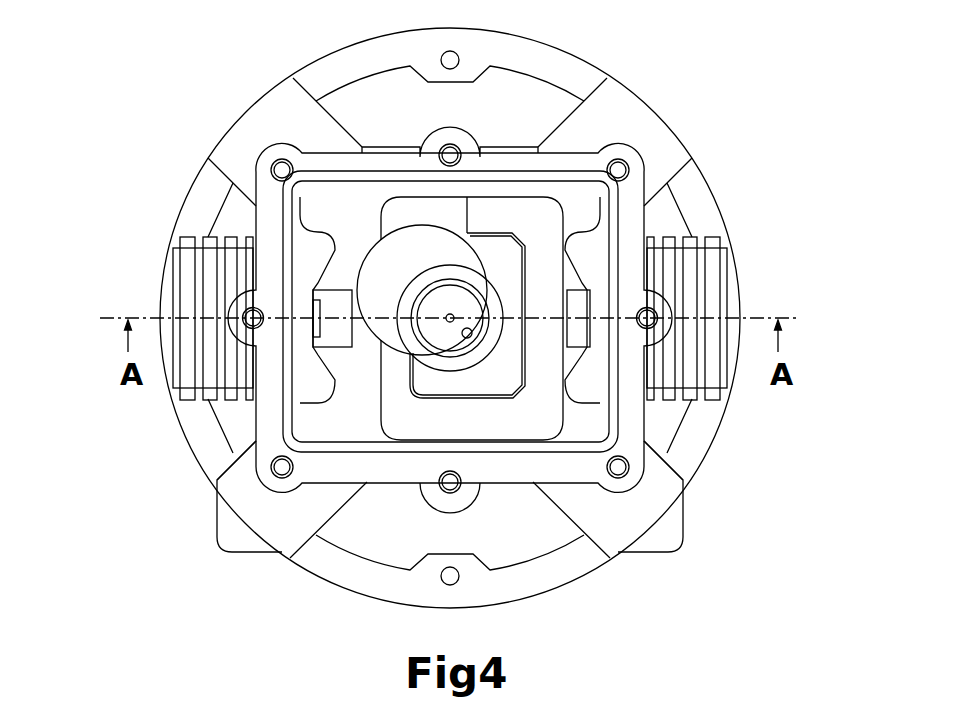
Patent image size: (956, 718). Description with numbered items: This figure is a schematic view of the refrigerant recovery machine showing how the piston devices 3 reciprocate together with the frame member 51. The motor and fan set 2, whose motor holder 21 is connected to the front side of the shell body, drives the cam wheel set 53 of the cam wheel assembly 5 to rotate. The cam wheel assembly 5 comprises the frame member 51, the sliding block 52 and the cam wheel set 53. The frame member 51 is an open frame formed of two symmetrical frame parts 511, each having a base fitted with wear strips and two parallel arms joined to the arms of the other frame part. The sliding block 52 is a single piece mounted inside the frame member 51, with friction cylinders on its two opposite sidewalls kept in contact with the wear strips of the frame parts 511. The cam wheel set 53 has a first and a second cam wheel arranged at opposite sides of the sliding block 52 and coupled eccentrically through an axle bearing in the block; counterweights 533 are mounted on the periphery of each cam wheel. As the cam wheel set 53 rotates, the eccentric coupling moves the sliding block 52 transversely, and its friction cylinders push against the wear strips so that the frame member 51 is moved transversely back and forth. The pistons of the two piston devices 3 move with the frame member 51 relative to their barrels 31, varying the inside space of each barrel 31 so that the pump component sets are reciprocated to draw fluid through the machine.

The motor and fan set 2 is at (700, 140).
The motor holder 21 is at (267, 105).
The piston device 3 is at (190, 228).
The barrel 31 is at (187, 282).
The cam wheel assembly 5 is at (553, 210).
The frame member 51 is at (683, 537).
The sliding block 52 is at (422, 377).
The cam wheel set 53 is at (262, 434).
The frame part 511 is at (413, 352).
The counterweight 533 is at (395, 268).